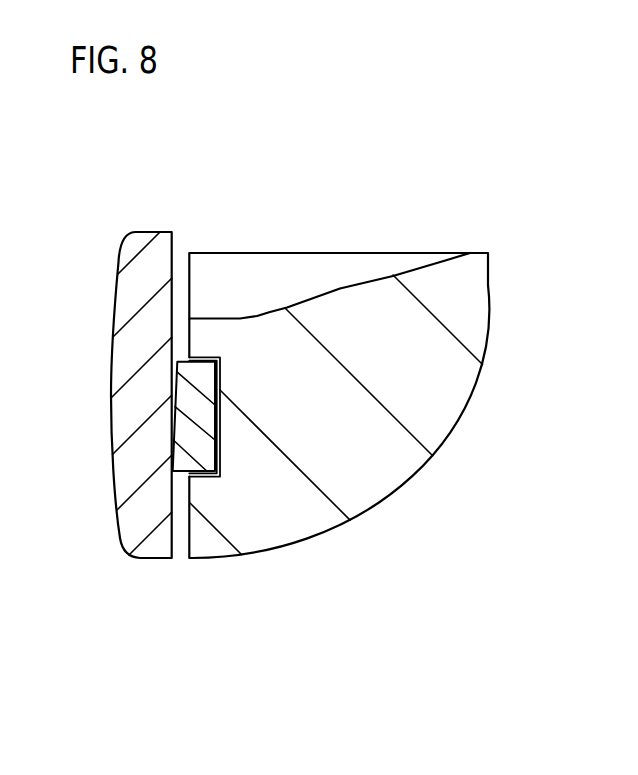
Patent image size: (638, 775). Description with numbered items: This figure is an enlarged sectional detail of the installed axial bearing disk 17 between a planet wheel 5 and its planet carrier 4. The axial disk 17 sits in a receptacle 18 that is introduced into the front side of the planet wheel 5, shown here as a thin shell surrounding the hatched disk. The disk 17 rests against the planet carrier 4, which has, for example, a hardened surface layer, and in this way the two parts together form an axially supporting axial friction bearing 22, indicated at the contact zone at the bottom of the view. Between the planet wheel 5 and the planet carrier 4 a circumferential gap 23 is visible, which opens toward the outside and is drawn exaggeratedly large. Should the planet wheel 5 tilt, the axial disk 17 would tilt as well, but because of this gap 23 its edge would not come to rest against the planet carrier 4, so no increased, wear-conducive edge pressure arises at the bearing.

The planet carrier 4 is at (132, 357).
The planet wheel 5 is at (377, 292).
The axial bearing disk 17 is at (198, 455).
The receptacle 18 is at (221, 433).
The axial friction bearing 22 is at (174, 588).
The circumferential gap 23 is at (182, 300).